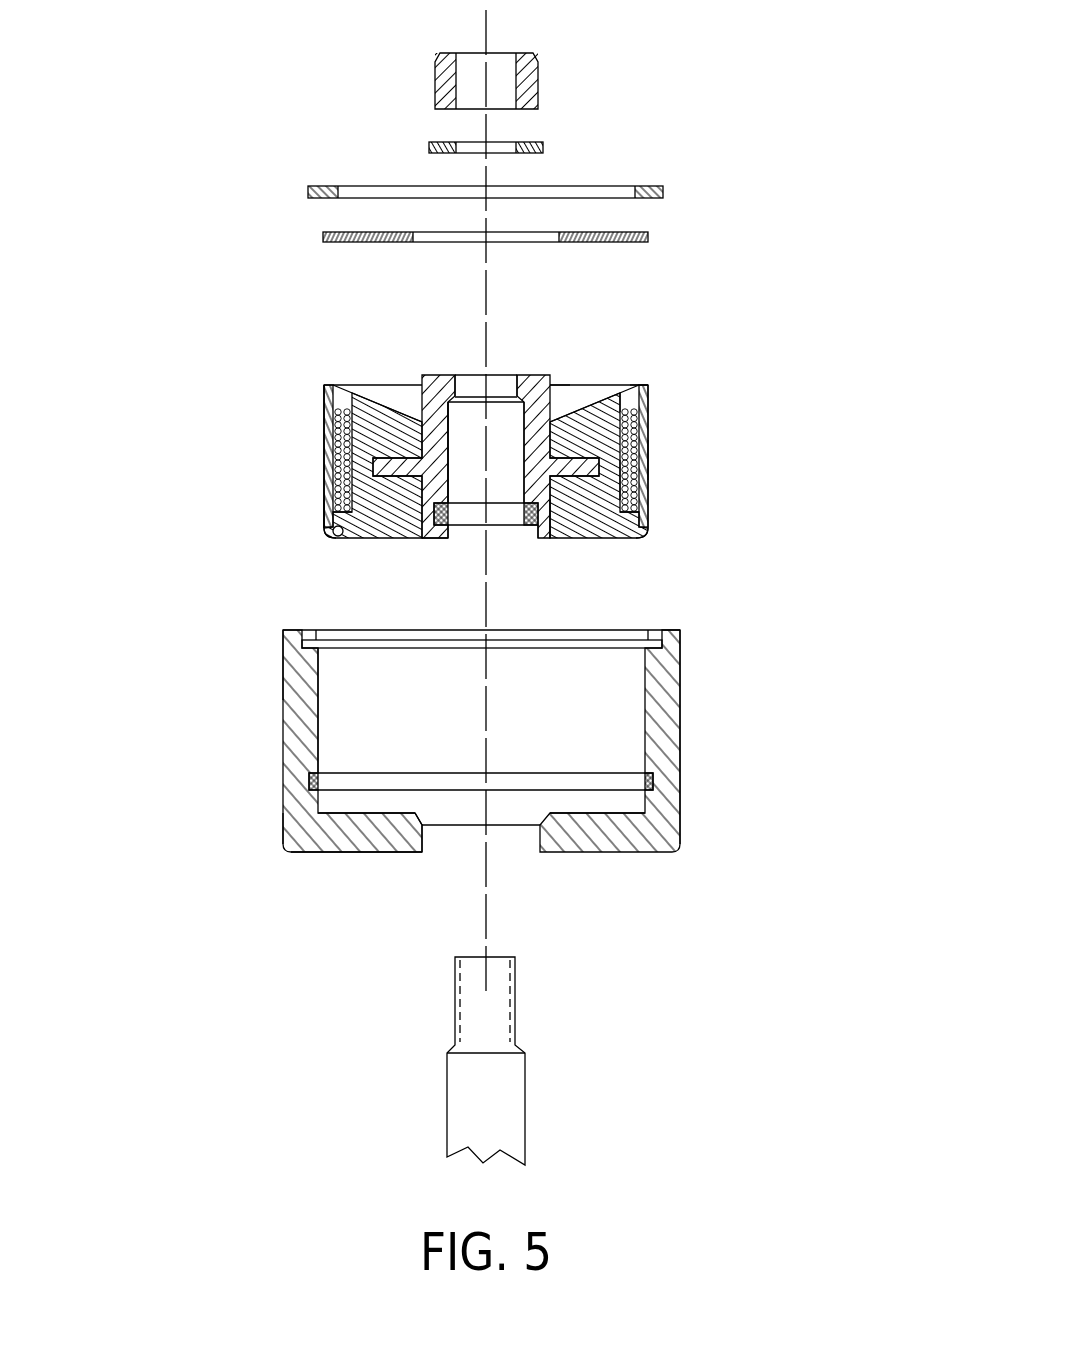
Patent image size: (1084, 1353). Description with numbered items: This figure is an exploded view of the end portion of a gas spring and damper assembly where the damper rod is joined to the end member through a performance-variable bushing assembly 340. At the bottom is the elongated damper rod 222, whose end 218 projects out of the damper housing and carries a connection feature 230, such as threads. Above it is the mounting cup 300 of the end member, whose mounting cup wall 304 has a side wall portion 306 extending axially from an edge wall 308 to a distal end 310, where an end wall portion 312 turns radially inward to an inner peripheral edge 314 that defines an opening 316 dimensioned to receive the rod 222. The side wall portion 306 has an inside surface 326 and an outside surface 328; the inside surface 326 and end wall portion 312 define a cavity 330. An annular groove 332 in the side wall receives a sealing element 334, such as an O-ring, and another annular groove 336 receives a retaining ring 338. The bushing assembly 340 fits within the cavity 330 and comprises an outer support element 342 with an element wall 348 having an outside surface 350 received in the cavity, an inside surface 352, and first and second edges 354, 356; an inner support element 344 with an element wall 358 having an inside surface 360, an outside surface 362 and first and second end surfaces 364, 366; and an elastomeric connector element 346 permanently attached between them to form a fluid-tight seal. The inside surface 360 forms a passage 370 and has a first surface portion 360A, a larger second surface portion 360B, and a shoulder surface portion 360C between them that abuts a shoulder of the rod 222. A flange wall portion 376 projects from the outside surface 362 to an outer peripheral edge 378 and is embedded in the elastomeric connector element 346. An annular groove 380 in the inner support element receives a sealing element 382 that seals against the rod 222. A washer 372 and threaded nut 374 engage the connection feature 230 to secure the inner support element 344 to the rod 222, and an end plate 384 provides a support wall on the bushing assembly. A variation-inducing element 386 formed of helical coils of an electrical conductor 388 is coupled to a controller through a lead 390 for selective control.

The end of damper rod assembly 218 is at (576, 1060).
The elongated damper rod 222 is at (508, 1105).
The connection feature 230 is at (515, 1012).
The mounting cup 300 is at (501, 742).
The mounting cup wall 304 is at (682, 745).
The side wall portion 306 is at (290, 733).
The edge wall 308 is at (297, 626).
The distal end 310 is at (277, 833).
The end wall portion 312 is at (352, 840).
The inner peripheral edge 314 is at (420, 838).
The opening 316 is at (456, 841).
The inside surface 326 is at (320, 713).
The outside surface 328 is at (283, 678).
The cavity 330 is at (609, 652).
The annular groove 332 is at (656, 777).
The sealing element 334 is at (670, 800).
The annular groove 336 is at (663, 642).
The retaining ring 338 is at (668, 191).
The performance-variable bushing assembly 340 is at (494, 448).
The outer support element 342 is at (323, 407).
The inner support element 344 is at (533, 386).
The elastomeric connector element 346 is at (375, 404).
The element wall 348 is at (326, 437).
The outside surface 350 is at (323, 508).
The inside surface 352 is at (327, 524).
The first edge 354 is at (647, 383).
The second edge 356 is at (648, 528).
The element wall 358 is at (560, 384).
The inside surface 360 is at (453, 471).
The first surface portion 360A is at (515, 382).
The second surface portion 360B is at (513, 528).
The shoulder surface portion 360C is at (472, 396).
The outside surface 362 is at (553, 525).
The first end surface 364 is at (443, 374).
The second end surface 366 is at (444, 540).
The passage 370 is at (495, 537).
The washer 372 is at (538, 141).
The threaded nut 374 is at (538, 72).
The flange wall portion 376 is at (372, 465).
The outer peripheral edge 378 is at (372, 472).
The annular groove 380 is at (430, 508).
The sealing element 382 is at (433, 530).
The end plate 384 is at (350, 244).
The variation-inducing element 386 is at (650, 458).
The electrical conductor 388 is at (637, 496).
The lead 390 is at (625, 384).